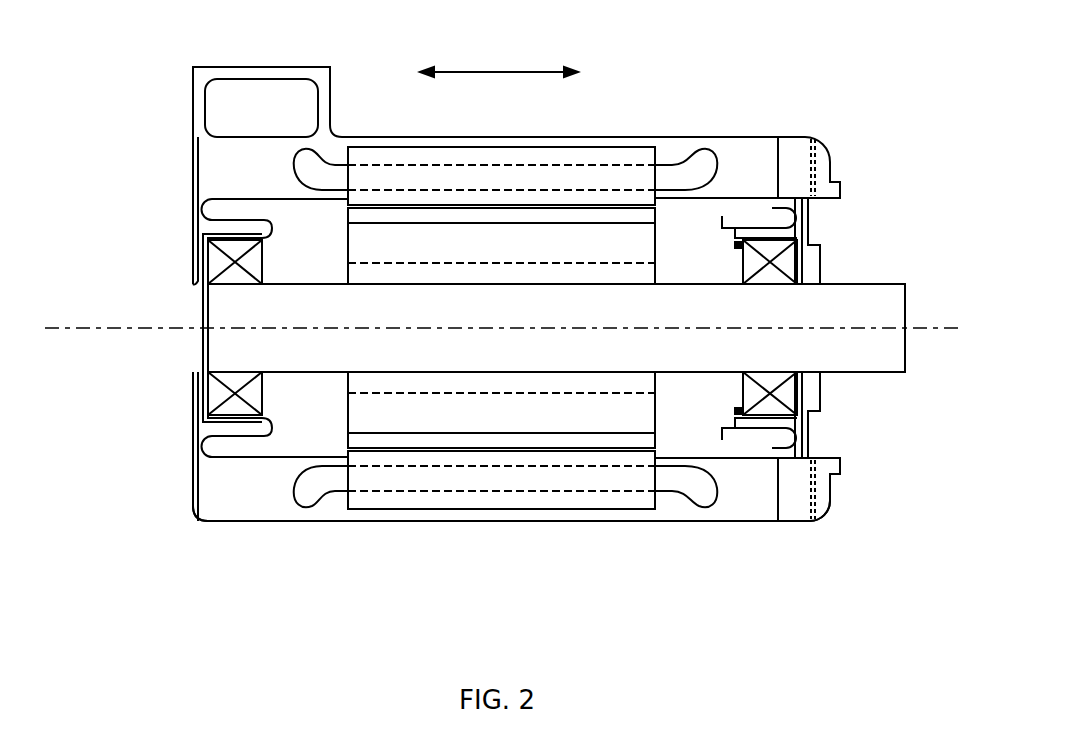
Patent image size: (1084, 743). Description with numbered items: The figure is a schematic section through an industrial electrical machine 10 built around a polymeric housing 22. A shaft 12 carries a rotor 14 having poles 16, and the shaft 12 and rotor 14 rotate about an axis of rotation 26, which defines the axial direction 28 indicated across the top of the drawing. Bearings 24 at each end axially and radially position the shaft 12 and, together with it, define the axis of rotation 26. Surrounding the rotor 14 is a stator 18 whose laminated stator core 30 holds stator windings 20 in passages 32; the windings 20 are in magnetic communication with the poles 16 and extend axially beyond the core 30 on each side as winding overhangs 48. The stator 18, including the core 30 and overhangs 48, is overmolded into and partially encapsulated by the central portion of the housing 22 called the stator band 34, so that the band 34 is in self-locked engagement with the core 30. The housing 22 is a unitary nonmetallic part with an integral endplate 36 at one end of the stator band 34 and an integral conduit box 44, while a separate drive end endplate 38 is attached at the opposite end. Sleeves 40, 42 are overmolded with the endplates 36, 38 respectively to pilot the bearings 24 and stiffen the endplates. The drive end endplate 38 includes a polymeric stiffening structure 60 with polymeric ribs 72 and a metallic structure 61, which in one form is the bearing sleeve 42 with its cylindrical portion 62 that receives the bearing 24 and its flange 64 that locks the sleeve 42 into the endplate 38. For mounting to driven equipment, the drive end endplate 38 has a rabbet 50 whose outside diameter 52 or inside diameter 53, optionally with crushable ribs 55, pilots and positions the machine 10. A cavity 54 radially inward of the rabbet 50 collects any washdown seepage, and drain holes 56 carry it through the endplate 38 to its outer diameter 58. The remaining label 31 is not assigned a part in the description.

The electrical machine 10 is at (177, 50).
The shaft 12 is at (843, 284).
The rotor 14 is at (656, 391).
The poles 16 is at (656, 212).
The stator 18 is at (278, 493).
The stator windings 20 is at (471, 496).
The polymeric housing 22 is at (216, 522).
The bearings 24 is at (200, 275).
The axis of rotation 26 is at (92, 340).
The axial direction 28 is at (511, 70).
The laminated stator core 30 is at (348, 199).
The rotor lamination 31 is at (659, 443).
The passages 32 is at (594, 496).
The stator band 34 is at (611, 136).
The endplate 36 is at (193, 478).
The drive end endplate 38 is at (828, 510).
The sleeve 40 is at (196, 372).
The bearing sleeve 42 is at (740, 406).
The conduit box 44 is at (337, 69).
The winding overhang 48 is at (292, 177).
The rabbet 50 is at (843, 190).
The outside diameter 52 is at (838, 181).
The inside diameter 53 is at (843, 434).
The cavity 54 is at (838, 228).
The crushable ribs 55 is at (840, 459).
The drain holes 56 is at (818, 522).
The outer diameter 58 is at (812, 136).
The polymeric stiffening structure 60 is at (752, 214).
The metallic structure 61 is at (727, 262).
The cylindrical portion 62 is at (741, 430).
The flange 64 is at (786, 511).
The polymeric ribs 72 is at (236, 216).